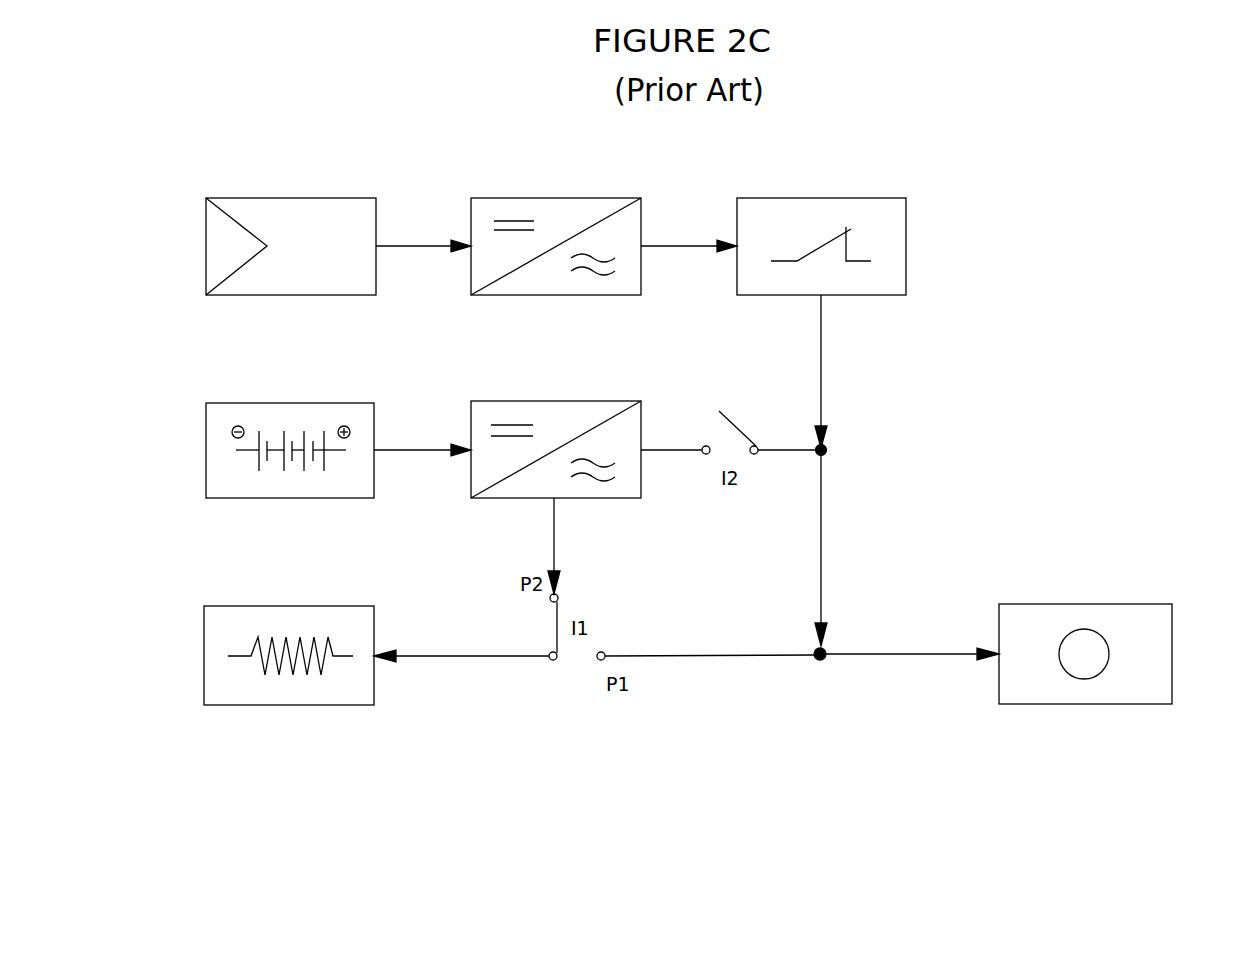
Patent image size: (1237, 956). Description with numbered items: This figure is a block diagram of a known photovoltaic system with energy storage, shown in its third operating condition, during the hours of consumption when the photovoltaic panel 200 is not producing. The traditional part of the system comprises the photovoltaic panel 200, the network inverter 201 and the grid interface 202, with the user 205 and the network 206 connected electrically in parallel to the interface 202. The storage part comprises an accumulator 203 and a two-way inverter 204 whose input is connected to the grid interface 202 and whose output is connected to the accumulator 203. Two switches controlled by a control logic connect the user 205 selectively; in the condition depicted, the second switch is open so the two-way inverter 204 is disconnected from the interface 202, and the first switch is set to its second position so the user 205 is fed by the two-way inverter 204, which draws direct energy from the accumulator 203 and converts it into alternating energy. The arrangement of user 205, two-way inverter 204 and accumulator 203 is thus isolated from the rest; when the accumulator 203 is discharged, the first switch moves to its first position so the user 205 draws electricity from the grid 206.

The photovoltaic panel 200 is at (375, 197).
The network inverter 201 is at (640, 197).
The grid interface 202 is at (905, 197).
The accumulator 203 is at (373, 402).
The two-way inverter 204 is at (640, 400).
The user 205 is at (373, 605).
The network 206 is at (1171, 603).